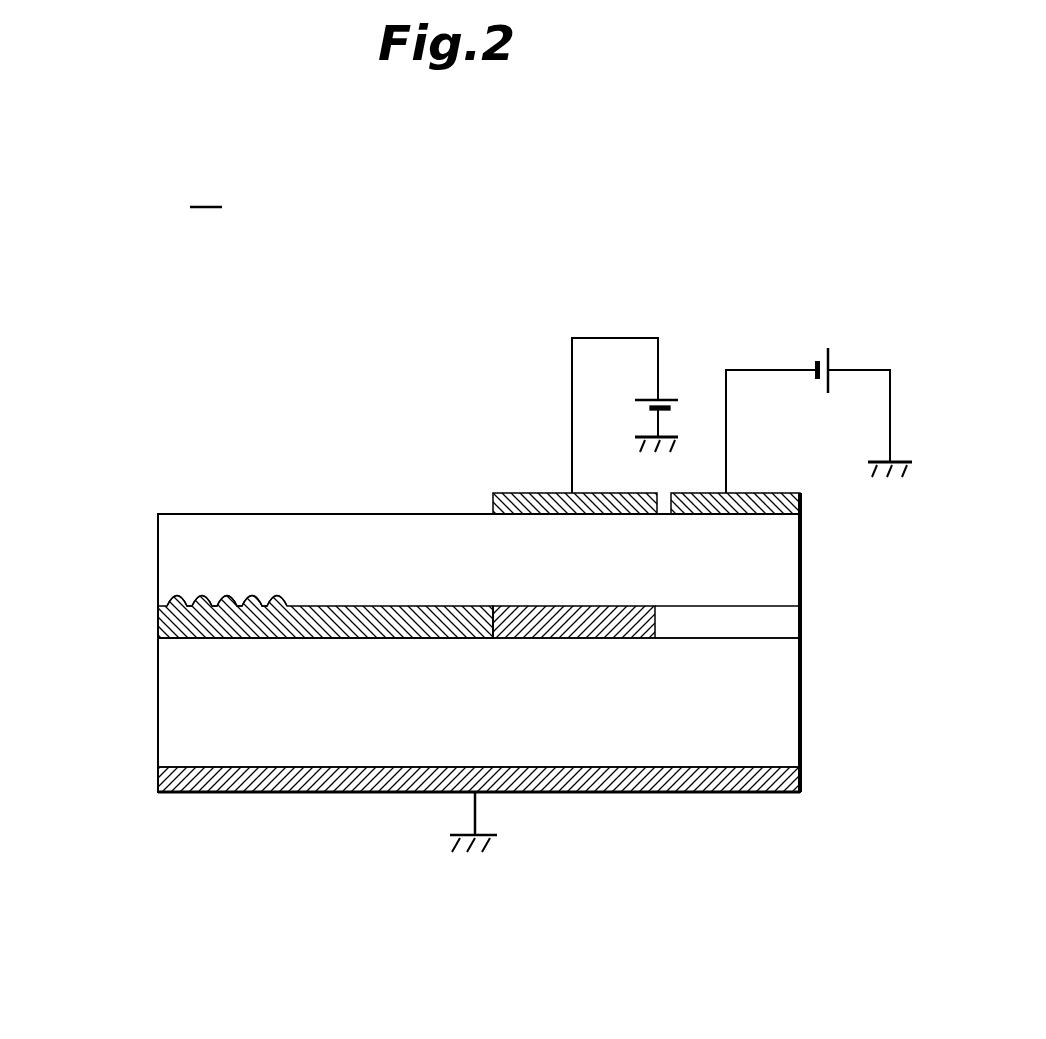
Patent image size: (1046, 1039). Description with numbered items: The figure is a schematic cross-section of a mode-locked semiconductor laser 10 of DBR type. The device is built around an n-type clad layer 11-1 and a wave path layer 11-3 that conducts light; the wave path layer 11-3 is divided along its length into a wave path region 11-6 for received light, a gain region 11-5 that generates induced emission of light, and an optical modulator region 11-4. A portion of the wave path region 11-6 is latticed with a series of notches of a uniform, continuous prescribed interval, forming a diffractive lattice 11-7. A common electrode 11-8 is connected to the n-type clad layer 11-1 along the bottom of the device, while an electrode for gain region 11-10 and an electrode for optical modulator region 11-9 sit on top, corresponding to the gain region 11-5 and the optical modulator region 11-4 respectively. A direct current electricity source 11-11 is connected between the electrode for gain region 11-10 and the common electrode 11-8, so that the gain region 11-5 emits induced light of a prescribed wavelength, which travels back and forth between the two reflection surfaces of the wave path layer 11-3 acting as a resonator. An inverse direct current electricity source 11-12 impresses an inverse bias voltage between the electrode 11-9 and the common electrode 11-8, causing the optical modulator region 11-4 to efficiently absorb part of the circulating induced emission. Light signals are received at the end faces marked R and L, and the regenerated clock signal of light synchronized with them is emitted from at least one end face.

The mode-locked semiconductor laser 10 is at (479, 484).
The n-type clad layer 11-1 is at (178, 723).
The wave path layer 11-3 is at (160, 630).
The optical modulator region 11-4 is at (792, 627).
The gain region 11-5 is at (592, 640).
The wave path region 11-6 is at (432, 640).
The diffractive lattice 11-7 is at (204, 596).
The common electrode 11-8 is at (160, 777).
The electrode for optical modulator region 11-9 is at (783, 493).
The electrode for gain region 11-10 is at (505, 491).
The direct current electricity source 11-11 is at (687, 402).
The inverse direct current electricity source 11-12 is at (821, 348).